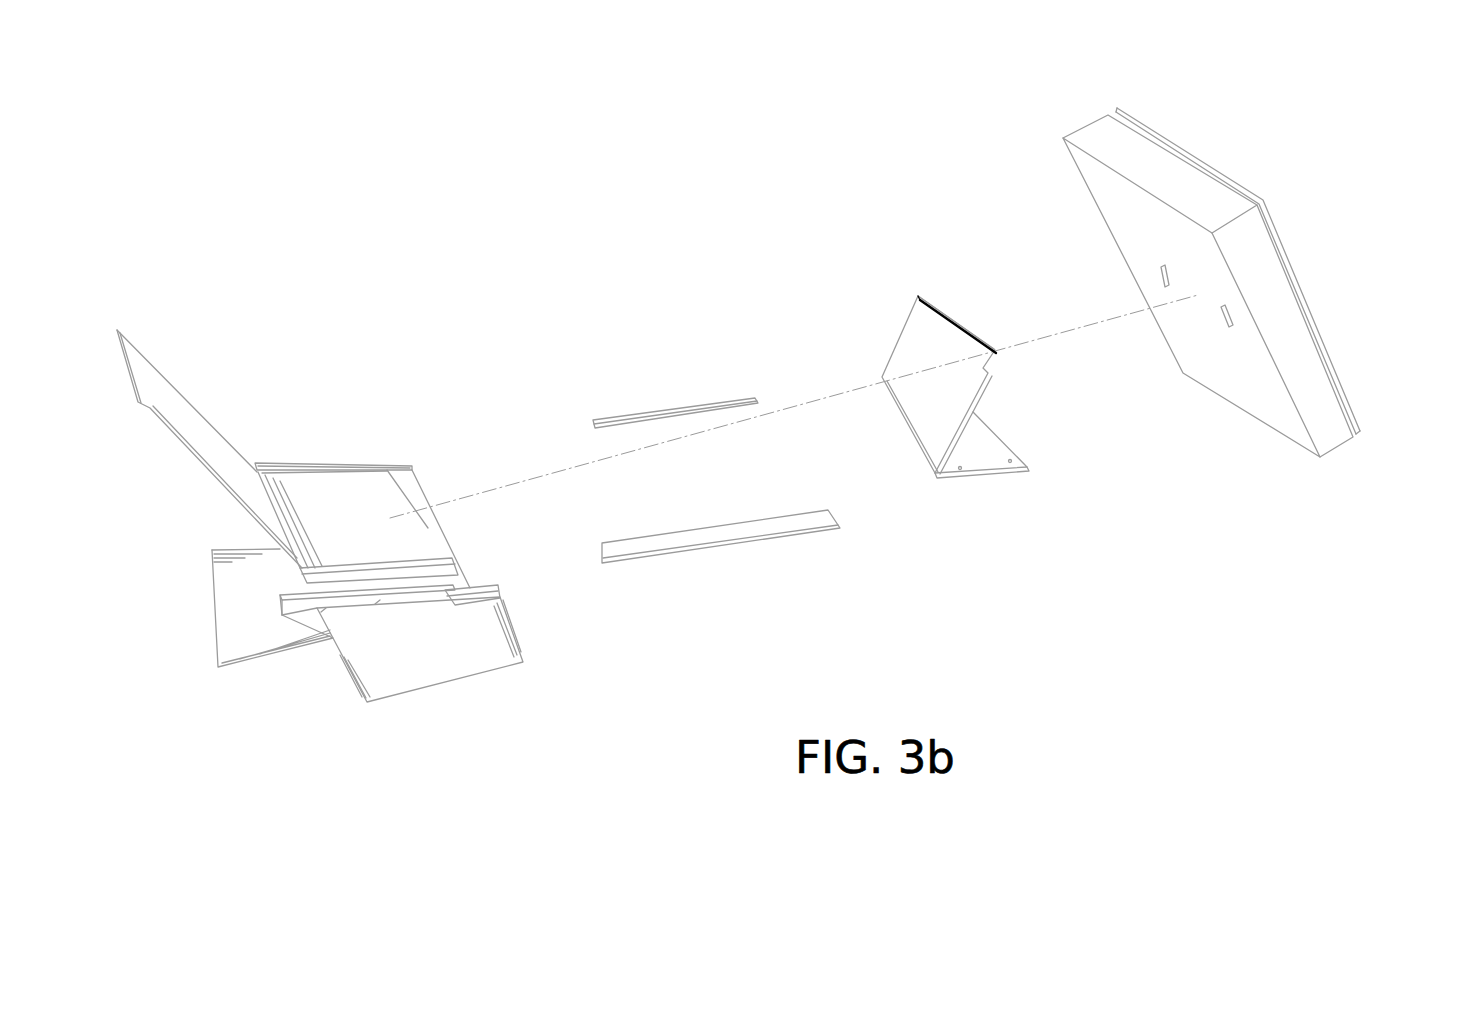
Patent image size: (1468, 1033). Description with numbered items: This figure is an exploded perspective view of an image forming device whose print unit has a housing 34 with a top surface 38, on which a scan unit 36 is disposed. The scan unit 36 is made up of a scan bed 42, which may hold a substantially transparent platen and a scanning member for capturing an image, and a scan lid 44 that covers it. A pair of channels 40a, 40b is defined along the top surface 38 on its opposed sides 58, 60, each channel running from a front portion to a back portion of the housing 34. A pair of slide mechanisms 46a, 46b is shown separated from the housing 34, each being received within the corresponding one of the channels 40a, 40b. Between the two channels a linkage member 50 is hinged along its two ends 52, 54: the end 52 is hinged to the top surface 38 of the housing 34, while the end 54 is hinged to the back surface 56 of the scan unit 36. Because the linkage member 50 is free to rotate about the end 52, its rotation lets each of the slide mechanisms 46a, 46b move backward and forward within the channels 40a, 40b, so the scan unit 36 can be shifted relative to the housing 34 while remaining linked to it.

The housing 34 is at (510, 640).
The scan unit 36 is at (1385, 301).
The top surface 38 is at (428, 528).
The channel 40a is at (384, 601).
The channel 40b is at (345, 465).
The scan bed 42 is at (1083, 124).
The scan lid 44 is at (1280, 228).
The slide mechanism 46a is at (756, 543).
The slide mechanism 46b is at (682, 400).
The linkage member 50 is at (900, 340).
The end 52 is at (923, 458).
The end 54 is at (951, 313).
The back surface 56 is at (1118, 212).
The side 58 is at (447, 594).
The side 60 is at (387, 463).